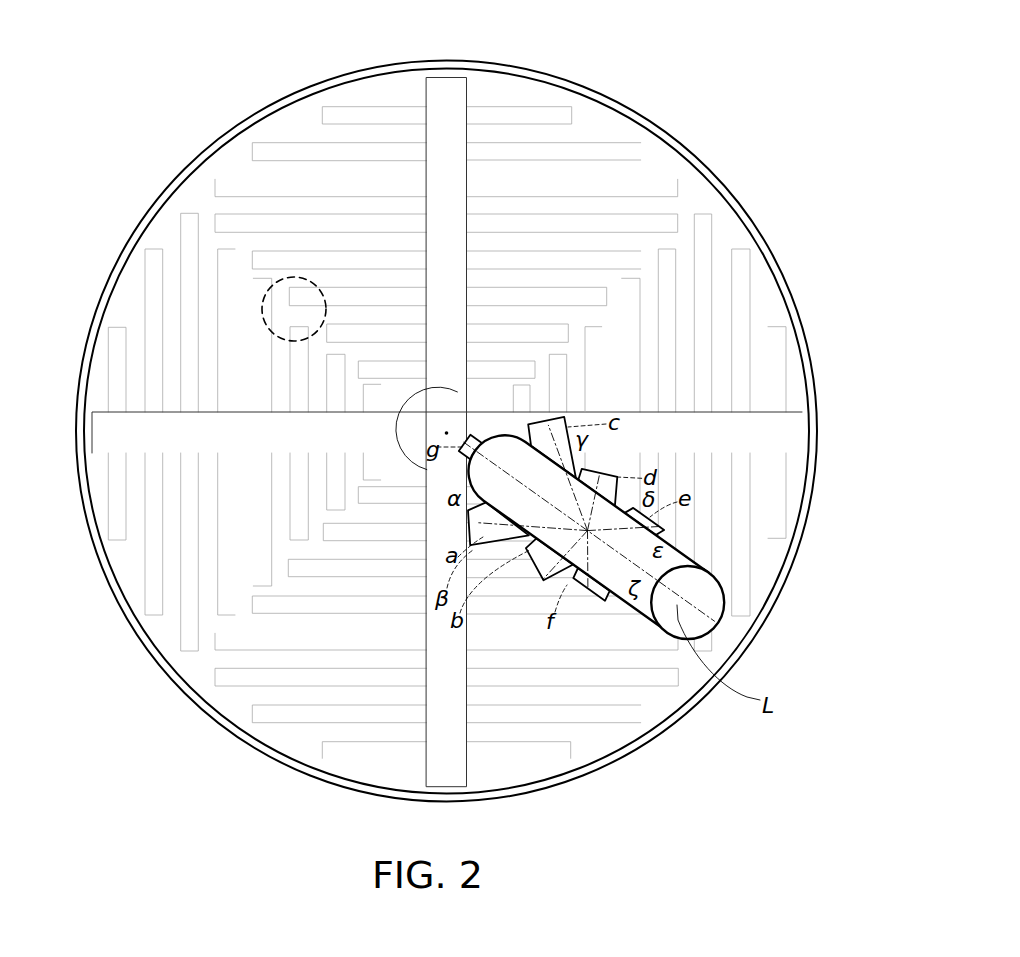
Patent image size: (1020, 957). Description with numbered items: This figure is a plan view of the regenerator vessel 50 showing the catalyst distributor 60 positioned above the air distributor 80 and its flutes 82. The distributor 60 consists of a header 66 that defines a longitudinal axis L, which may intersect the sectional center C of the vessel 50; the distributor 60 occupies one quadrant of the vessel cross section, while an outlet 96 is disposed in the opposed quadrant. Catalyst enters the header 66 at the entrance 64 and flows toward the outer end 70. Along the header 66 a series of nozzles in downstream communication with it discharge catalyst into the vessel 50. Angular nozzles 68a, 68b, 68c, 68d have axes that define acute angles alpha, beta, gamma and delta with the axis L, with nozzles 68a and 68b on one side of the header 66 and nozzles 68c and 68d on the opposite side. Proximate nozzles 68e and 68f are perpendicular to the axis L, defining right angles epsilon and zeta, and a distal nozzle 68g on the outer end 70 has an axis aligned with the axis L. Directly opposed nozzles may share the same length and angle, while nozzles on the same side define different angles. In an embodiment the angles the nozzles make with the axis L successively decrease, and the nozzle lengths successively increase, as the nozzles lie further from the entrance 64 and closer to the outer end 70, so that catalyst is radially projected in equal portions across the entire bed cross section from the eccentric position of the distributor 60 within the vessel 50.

The regenerator vessel 50 is at (762, 242).
The catalyst distributor 60 is at (576, 331).
The entrance 64 is at (668, 582).
The header 66 is at (703, 565).
The angular nozzle 68a is at (467, 523).
The angular nozzle 68b is at (557, 580).
The angular nozzle 68c is at (547, 428).
The angular nozzle 68d is at (600, 473).
The proximate nozzle 68e is at (659, 525).
The proximate nozzle 68f is at (607, 600).
The distal nozzle 68g is at (485, 442).
The outer end 70 is at (460, 472).
The air distributor 80 is at (449, 102).
The flutes 82 is at (233, 193).
The outlet 96 is at (265, 291).